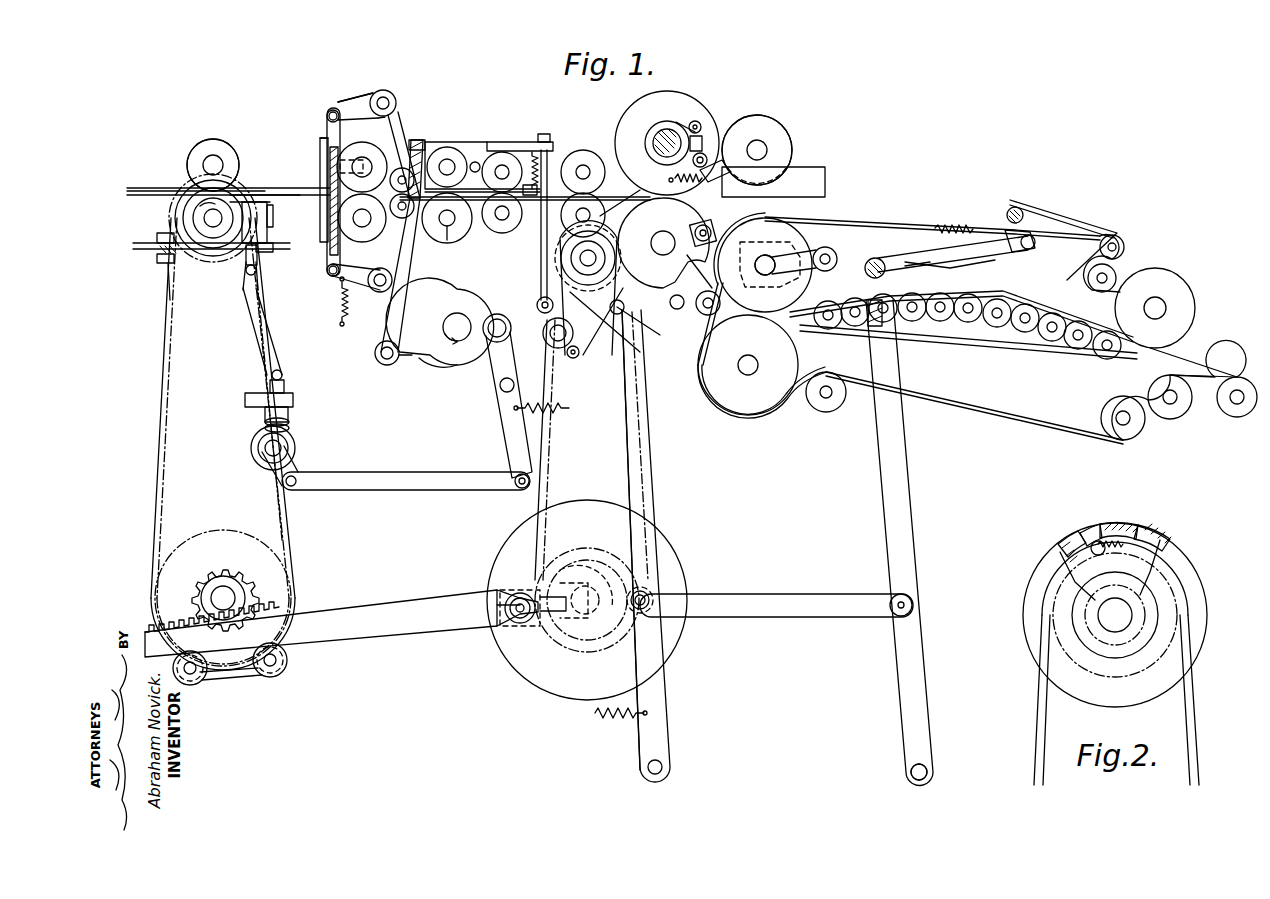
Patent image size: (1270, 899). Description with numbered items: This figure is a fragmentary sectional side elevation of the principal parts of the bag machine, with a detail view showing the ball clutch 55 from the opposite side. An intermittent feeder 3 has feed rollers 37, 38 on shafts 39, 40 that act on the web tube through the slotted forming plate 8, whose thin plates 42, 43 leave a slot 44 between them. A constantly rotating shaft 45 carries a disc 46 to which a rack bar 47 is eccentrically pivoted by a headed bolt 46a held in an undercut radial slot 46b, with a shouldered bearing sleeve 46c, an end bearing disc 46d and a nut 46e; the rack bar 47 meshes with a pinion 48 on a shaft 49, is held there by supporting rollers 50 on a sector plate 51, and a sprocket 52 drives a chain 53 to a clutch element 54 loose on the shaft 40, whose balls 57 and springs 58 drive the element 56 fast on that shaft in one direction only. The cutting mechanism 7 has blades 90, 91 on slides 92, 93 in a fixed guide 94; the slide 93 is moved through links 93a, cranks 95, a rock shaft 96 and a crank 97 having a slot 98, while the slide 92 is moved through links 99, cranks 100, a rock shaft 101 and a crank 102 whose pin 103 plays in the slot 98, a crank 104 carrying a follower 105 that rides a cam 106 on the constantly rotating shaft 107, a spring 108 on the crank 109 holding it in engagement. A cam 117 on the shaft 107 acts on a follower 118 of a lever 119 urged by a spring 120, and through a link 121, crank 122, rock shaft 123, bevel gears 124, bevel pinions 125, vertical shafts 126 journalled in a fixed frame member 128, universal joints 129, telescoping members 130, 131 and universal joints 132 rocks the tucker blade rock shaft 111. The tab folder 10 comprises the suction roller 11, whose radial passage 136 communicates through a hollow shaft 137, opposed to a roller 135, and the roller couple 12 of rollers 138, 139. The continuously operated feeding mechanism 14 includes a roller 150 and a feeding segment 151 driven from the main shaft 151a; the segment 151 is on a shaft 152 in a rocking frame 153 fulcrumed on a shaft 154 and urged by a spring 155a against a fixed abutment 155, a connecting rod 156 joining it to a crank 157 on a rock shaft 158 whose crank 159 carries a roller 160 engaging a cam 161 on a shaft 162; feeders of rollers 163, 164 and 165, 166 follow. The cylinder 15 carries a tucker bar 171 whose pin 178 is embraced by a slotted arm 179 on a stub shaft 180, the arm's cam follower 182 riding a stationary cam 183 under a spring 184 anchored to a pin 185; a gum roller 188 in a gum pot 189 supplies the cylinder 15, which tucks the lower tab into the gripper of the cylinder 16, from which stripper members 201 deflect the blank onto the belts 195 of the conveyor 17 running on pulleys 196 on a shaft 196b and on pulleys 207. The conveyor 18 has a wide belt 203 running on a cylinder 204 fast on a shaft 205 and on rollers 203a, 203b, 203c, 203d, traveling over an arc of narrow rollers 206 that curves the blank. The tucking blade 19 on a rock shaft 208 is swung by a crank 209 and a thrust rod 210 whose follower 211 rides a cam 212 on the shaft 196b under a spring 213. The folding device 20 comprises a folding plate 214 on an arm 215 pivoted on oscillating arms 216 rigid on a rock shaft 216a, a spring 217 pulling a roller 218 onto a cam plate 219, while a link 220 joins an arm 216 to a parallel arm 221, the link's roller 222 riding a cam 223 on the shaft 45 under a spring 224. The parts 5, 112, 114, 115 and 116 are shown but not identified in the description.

In FIG. 1, the feed roller unit 3 is at (212, 130).
In FIG. 1, the printing unit 5 is at (722, 120).
In FIG. 1, the folding unit 7 is at (322, 98).
In FIG. 1, the feed table 8 is at (268, 186).
In FIG. 1, the guide plate 10 is at (418, 138).
In FIG. 1, the frame plate 11 is at (355, 108).
In FIG. 1, the guide roller 12 is at (404, 218).
In FIG. 1, the sheet path 14 is at (478, 235).
In FIG. 1, the printing cylinder 15 is at (652, 106).
In FIG. 1, the cam disc 16 is at (650, 295).
In FIG. 1, the conveyor belt 17 is at (880, 214).
In FIG. 1, the delivery belt 18 is at (1014, 420).
In FIG. 1, the deflector lever 19 is at (1060, 225).
In FIG. 1, the link rod 20 is at (954, 271).
In FIG. 1, the upper feed roller 37 is at (204, 150).
In FIG. 1, the lower feed roller 38 is at (203, 207).
In FIG. 1, the roller shaft 39 is at (216, 160).
In FIG. 1, the drive shaft 40 is at (212, 226).
In FIG. 2, the drive shaft 40 is at (1115, 598).
In FIG. 1, the support block 42 is at (280, 197).
In FIG. 1, the guide plate 43 is at (298, 216).
In FIG. 1, the lower plate 44 is at (282, 205).
In FIG. 1, the crank pin 45 is at (592, 614).
In FIG. 1, the drive disc 46 is at (508, 656).
In FIG. 1, the rack end 46a is at (504, 607).
In FIG. 1, the cam slot 46b is at (562, 640).
In FIG. 1, the pivot pin 46c is at (516, 592).
In FIG. 1, the slide block 46d is at (526, 625).
In FIG. 1, the roller 46e is at (503, 598).
In FIG. 1, the rack 47 is at (388, 634).
In FIG. 1, the pinion 48 is at (243, 588).
In FIG. 1, the pinion shaft 49 is at (224, 586).
In FIG. 1, the rack guide rollers 50 is at (201, 678).
In FIG. 1, the roller link 51 is at (232, 676).
In FIG. 1, the belt pulley 52 is at (228, 535).
In FIG. 1, the drive belt 53 is at (160, 444).
In FIG. 2, the drive belt 53 is at (1036, 708).
In FIG. 2, the clutch shoe 54 is at (1066, 540).
In FIG. 2, the clutch drum 55 is at (1020, 592).
In FIG. 2, the clutch shoe 56 is at (1150, 538).
In FIG. 2, the pivot pin 57 is at (1094, 540).
In FIG. 2, the clutch spring 58 is at (1120, 525).
In FIG. 1, the rack bar 90 is at (322, 202).
In FIG. 1, the roller shaft 91 is at (363, 177).
In FIG. 1, the guide bar 92 is at (320, 230).
In FIG. 1, the toothed bar 93 is at (327, 163).
In FIG. 1, the pivot 93a is at (327, 116).
In FIG. 1, the lever arm 94 is at (326, 252).
In FIG. 1, the swing frame 95 is at (345, 103).
In FIG. 1, the pivot shaft 96 is at (383, 91).
In FIG. 1, the link 97 is at (404, 118).
In FIG. 1, the guide roller 98 is at (410, 174).
In FIG. 1, the pivot pin 99 is at (328, 276).
In FIG. 1, the tension spring 100 is at (325, 299).
In FIG. 1, the pivot 101 is at (365, 293).
In FIG. 1, the lever 102 is at (393, 258).
In FIG. 1, the roller 103 is at (447, 217).
In FIG. 1, the link 104 is at (370, 300).
In FIG. 1, the pivot 105 is at (378, 363).
In FIG. 1, the cam follower 106 is at (428, 364).
In FIG. 1, the cam shaft 107 is at (458, 342).
In FIG. 1, the spring anchor 108 is at (340, 325).
In FIG. 1, the follower arm 109 is at (404, 360).
In FIG. 1, the bracket 111 is at (266, 250).
In FIG. 1, the shaft 112 is at (133, 246).
In FIG. 1, the support 114 is at (168, 264).
In FIG. 1, the collar 115 is at (157, 258).
In FIG. 1, the collar 116 is at (157, 237).
In FIG. 1, the cam 117 is at (426, 308).
In FIG. 1, the cam roller 118 is at (497, 318).
In FIG. 1, the lever 119 is at (508, 445).
In FIG. 1, the spring 120 is at (556, 414).
In FIG. 1, the link rod 121 is at (402, 479).
In FIG. 1, the crank arm 122 is at (296, 472).
In FIG. 1, the shaft 123 is at (283, 448).
In FIG. 1, the disc 124 is at (251, 449).
In FIG. 1, the collar 125 is at (290, 426).
In FIG. 1, the pin 126 is at (282, 385).
In FIG. 1, the slide block 128 is at (245, 398).
In FIG. 1, the path 129 is at (260, 375).
In FIG. 1, the connecting rod 130 is at (262, 337).
In FIG. 1, the pivot 131 is at (250, 286).
In FIG. 1, the bracket 132 is at (242, 262).
In FIG. 1, the roller shaft 135 is at (360, 242).
In FIG. 1, the roller 136 is at (360, 150).
In FIG. 1, the arm 137 is at (340, 170).
In FIG. 1, the guide block 138 is at (425, 131).
In FIG. 1, the roller 139 is at (362, 216).
In FIG. 1, the roller shaft 150 is at (449, 236).
In FIG. 1, the roller 151 is at (446, 146).
In FIG. 1, the roller 151a is at (592, 258).
In FIG. 1, the shaft 152 is at (449, 158).
In FIG. 1, the frame bar 153 is at (525, 141).
In FIG. 1, the pin 154 is at (476, 161).
In FIG. 1, the spring seat 155 is at (529, 196).
In FIG. 1, the roller 155a is at (583, 160).
In FIG. 1, the rod 156 is at (541, 252).
In FIG. 1, the lever 157 is at (632, 355).
In FIG. 1, the link 158 is at (625, 318).
In FIG. 1, the link 159 is at (578, 358).
In FIG. 1, the link 160 is at (575, 360).
In FIG. 1, the roller 161 is at (550, 330).
In FIG. 1, the pin 162 is at (567, 352).
In FIG. 1, the roller 163 is at (497, 158).
In FIG. 1, the roller 164 is at (502, 226).
In FIG. 1, the spring 165 is at (670, 180).
In FIG. 1, the guide 166 is at (606, 220).
In FIG. 1, the block 171 is at (702, 143).
In FIG. 1, the pivot 178 is at (708, 164).
In FIG. 1, the arm 179 is at (684, 124).
In FIG. 1, the pin 180 is at (701, 127).
In FIG. 1, the pawl 182 is at (714, 180).
In FIG. 1, the hub 183 is at (645, 135).
In FIG. 1, the roller 184 is at (696, 192).
In FIG. 1, the guide 185 is at (640, 170).
In FIG. 1, the roller 188 is at (752, 117).
In FIG. 1, the support block 189 is at (804, 172).
In FIG. 1, the belt 195 is at (918, 228).
In FIG. 1, the cam pulley 196 is at (785, 237).
In FIG. 1, the shaft 196b is at (763, 275).
In FIG. 1, the pin 201 is at (679, 310).
In FIG. 1, the belt 203 is at (958, 395).
In FIG. 1, the belt roller 203a is at (1240, 378).
In FIG. 1, the belt roller 203b is at (1180, 412).
In FIG. 1, the belt roller 203c is at (1132, 436).
In FIG. 1, the belt roller 203d is at (816, 410).
In FIG. 1, the pulley 204 is at (708, 390).
In FIG. 1, the pulley shaft 205 is at (749, 377).
In FIG. 1, the rollers 206 is at (852, 326).
In FIG. 1, the pulley 207 is at (1170, 285).
In FIG. 1, the pivot 208 is at (1014, 207).
In FIG. 1, the roller 209 is at (1034, 246).
In FIG. 1, the block 210 is at (1010, 250).
In FIG. 1, the arm 211 is at (828, 250).
In FIG. 1, the belt 212 is at (752, 238).
In FIG. 1, the spring 213 is at (945, 228).
In FIG. 1, the rod 214 is at (936, 270).
In FIG. 1, the pivot 215 is at (878, 260).
In FIG. 1, the lever 216 is at (897, 508).
In FIG. 1, the pivot 216a is at (910, 771).
In FIG. 1, the bracket 217 is at (888, 322).
In FIG. 1, the rod 218 is at (960, 262).
In FIG. 1, the plate 219 is at (1060, 345).
In FIG. 1, the connecting rod 220 is at (768, 608).
In FIG. 1, the lever 221 is at (660, 732).
In FIG. 1, the pin 222 is at (652, 592).
In FIG. 1, the cam track 223 is at (578, 560).
In FIG. 1, the spring 224 is at (606, 722).